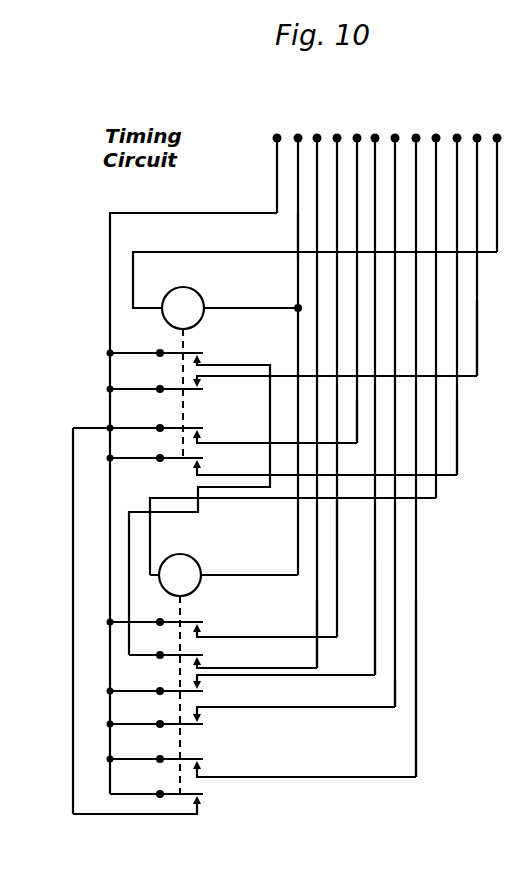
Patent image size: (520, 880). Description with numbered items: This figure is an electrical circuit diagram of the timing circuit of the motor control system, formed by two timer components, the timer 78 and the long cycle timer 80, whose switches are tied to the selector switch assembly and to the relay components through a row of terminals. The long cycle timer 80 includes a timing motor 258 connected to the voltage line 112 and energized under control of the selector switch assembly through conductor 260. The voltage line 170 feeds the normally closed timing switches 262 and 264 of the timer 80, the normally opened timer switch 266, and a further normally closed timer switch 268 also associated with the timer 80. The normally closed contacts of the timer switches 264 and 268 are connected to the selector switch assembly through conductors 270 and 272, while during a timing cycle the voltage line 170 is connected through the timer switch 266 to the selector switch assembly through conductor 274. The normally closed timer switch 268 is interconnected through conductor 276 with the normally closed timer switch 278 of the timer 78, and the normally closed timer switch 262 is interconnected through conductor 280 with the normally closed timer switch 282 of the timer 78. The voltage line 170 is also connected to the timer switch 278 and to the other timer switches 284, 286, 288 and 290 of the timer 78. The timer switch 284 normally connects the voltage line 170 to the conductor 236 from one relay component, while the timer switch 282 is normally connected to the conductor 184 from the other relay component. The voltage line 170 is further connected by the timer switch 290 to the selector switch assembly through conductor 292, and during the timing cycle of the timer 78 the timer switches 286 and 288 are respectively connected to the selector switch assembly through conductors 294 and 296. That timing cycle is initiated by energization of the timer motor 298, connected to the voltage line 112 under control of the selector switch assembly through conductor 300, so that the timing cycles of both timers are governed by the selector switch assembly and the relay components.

The timer component 78 is at (242, 783).
The long cycle timer 80 is at (104, 337).
The voltage line 112 is at (293, 226).
The voltage line 170 is at (277, 168).
The conductor 184 is at (319, 645).
The conductor 236 is at (337, 533).
The timing motor 258 is at (200, 291).
The conductor 260 is at (499, 133).
The normally closed timing switch 262 is at (201, 355).
The normally closed timing switch 264 is at (208, 456).
The normally opened timer switch 266 is at (188, 392).
The normally closed timer switch 268 is at (203, 428).
The conductor 270 is at (457, 450).
The conductor 272 is at (340, 445).
The conductor 274 is at (474, 358).
The conductor 276 is at (73, 583).
The normally closed timer switch 278 is at (202, 800).
The conductor 280 is at (228, 488).
The normally closed timer switch 282 is at (206, 654).
The timer switch 284 is at (206, 622).
The timer switch 286 is at (204, 694).
The timer switch 288 is at (200, 728).
The timer switch 290 is at (204, 758).
The conductor 292 is at (415, 657).
The conductor 294 is at (375, 597).
The conductor 296 is at (388, 708).
The timer motor 298 is at (184, 552).
The conductor 300 is at (420, 503).